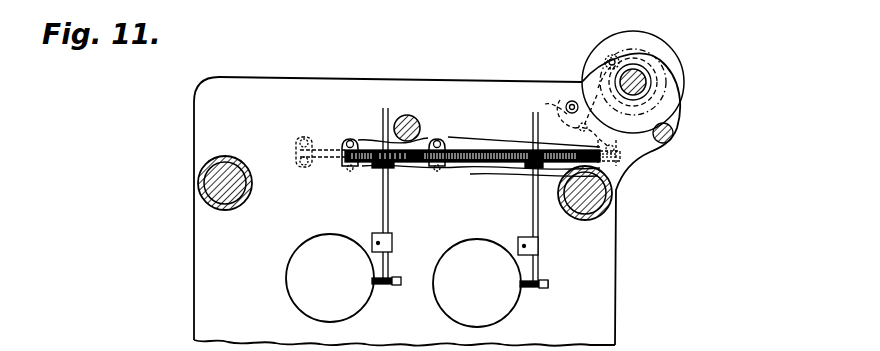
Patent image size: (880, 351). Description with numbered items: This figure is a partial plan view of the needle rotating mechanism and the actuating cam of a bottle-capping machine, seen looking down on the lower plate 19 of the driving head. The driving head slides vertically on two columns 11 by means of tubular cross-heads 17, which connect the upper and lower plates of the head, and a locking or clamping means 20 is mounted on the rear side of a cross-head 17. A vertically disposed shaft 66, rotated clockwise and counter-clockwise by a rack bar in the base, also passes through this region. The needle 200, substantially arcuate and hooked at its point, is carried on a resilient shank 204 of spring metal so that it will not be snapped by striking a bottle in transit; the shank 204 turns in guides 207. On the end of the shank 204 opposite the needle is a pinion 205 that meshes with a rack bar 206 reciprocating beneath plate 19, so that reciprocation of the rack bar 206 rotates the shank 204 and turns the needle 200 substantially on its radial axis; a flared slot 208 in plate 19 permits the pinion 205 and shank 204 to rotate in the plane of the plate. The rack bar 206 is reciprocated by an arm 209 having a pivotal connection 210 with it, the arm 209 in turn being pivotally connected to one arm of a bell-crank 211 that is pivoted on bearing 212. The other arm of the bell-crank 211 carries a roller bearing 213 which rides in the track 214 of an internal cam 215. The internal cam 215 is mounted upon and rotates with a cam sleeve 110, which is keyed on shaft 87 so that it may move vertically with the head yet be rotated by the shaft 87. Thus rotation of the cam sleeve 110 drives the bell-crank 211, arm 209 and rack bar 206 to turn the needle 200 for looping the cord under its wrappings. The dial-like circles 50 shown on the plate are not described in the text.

The columns 11 is at (198, 170).
The tubular cross-heads 17 is at (200, 183).
The lower plate 19 is at (615, 243).
The locking or clamping means 20 is at (530, 290).
The dial 50 is at (403, 280).
The shaft 66 is at (416, 118).
The shaft 87 is at (640, 78).
The cam sleeve 110 is at (650, 66).
The needle 200 is at (378, 286).
The shank 204 is at (383, 200).
The pinion 205 is at (386, 118).
The rack bar 206 is at (358, 137).
The guides 207 is at (334, 168).
The flared slot 208 is at (390, 260).
The arm 209 is at (500, 135).
The pivotal connection 210 is at (421, 150).
The bell-crank 211 is at (567, 118).
The bearing 212 is at (566, 96).
The roller bearing 213 is at (604, 56).
The track 214 is at (662, 49).
The internal cam 215 is at (686, 84).